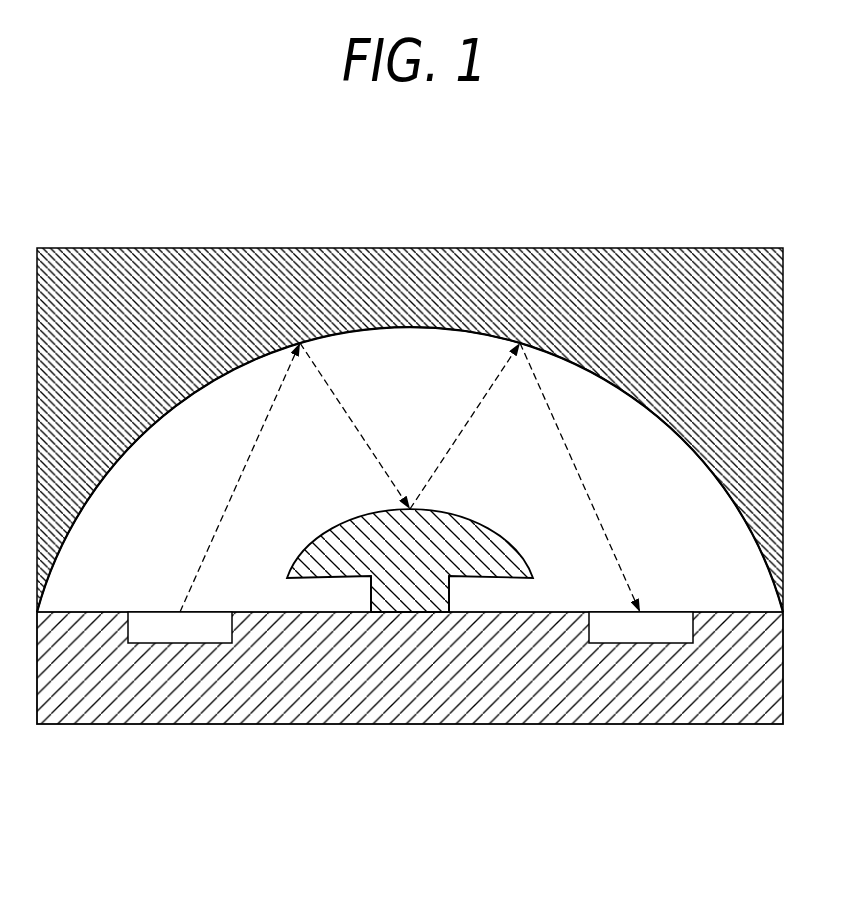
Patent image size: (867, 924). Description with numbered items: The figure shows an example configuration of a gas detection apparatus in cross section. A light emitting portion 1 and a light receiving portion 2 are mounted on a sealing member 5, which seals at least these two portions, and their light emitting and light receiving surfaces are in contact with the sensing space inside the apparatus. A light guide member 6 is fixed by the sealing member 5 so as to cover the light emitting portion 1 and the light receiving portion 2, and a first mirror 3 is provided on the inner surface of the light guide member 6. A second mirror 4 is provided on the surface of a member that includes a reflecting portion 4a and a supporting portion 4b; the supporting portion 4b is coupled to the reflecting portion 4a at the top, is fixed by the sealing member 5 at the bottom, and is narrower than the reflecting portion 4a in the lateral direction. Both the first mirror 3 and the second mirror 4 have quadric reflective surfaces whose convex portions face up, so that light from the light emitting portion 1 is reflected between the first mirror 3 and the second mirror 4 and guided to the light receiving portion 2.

The light emitting portion 1 is at (158, 618).
The light receiving portion 2 is at (665, 622).
The first mirror 3 is at (410, 329).
The second mirror 4 is at (442, 531).
The reflecting portion 4a is at (542, 510).
The supporting portion 4b is at (458, 594).
The sealing member 5 is at (410, 700).
The light guide member 6 is at (413, 262).